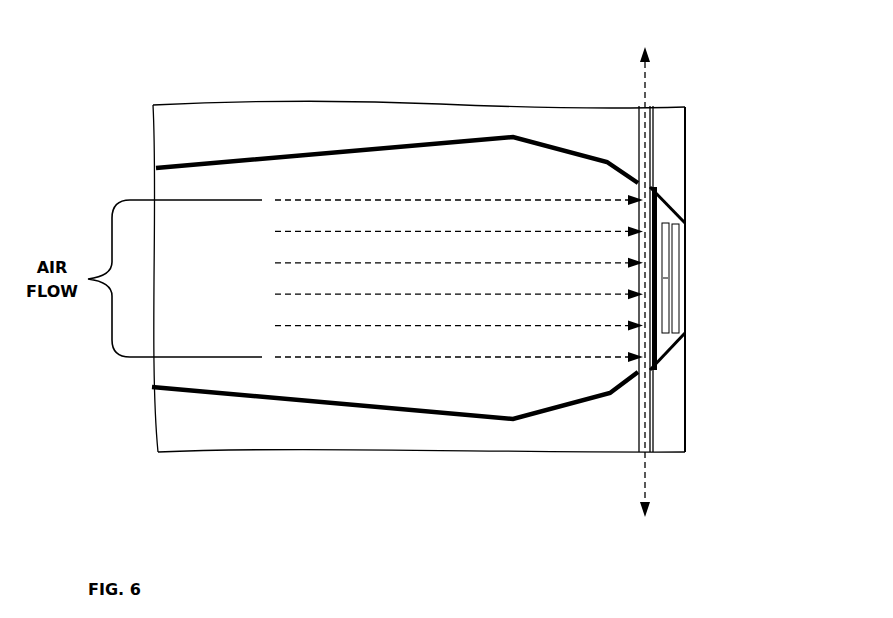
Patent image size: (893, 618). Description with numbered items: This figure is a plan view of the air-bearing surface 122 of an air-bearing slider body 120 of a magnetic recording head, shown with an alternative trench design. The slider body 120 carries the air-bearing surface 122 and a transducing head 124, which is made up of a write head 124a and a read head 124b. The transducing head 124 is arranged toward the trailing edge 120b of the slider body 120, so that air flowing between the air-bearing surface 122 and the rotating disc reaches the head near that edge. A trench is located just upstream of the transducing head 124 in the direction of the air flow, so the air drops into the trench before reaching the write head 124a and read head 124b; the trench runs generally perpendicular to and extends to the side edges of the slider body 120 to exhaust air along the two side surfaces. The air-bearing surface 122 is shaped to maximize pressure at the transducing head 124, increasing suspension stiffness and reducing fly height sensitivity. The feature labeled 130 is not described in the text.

The air-bearing slider body 120 is at (471, 88).
The trailing edge 120b is at (688, 111).
The air-bearing surface 122 is at (193, 120).
The transducing head 124 is at (736, 245).
The write head 124a is at (664, 219).
The read head 124b is at (680, 230).
The slot 130 is at (638, 413).